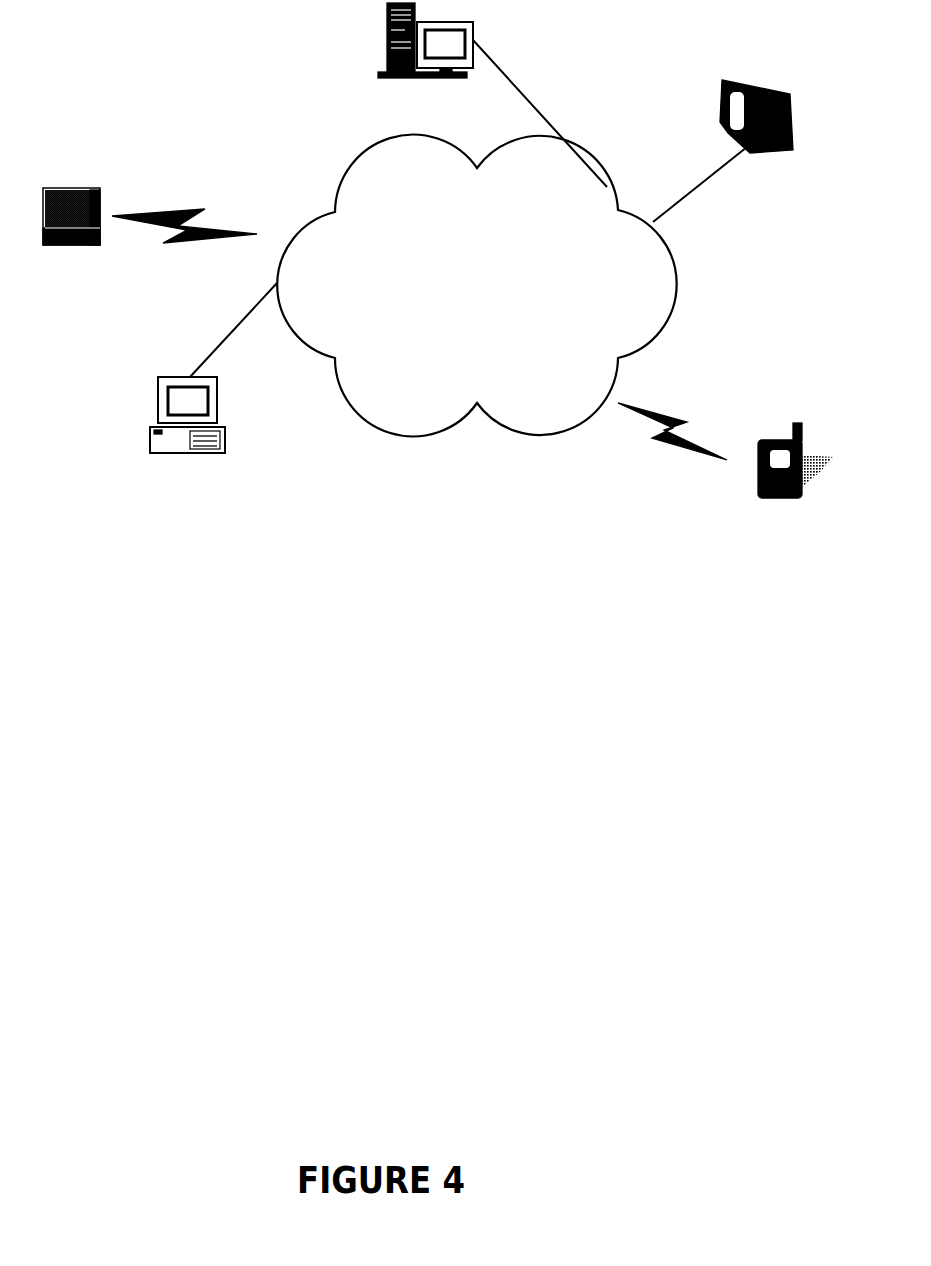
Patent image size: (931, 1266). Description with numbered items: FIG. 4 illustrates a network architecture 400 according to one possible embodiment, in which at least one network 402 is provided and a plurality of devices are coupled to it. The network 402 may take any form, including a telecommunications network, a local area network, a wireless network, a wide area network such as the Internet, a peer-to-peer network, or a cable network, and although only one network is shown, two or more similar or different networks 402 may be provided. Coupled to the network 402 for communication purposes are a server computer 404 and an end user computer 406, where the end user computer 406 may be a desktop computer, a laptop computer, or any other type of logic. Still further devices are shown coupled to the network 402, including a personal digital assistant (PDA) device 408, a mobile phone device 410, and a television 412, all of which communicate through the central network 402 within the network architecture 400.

The network architecture 400 is at (448, 460).
The network 402 is at (535, 435).
The server computer 404 is at (387, 42).
The end user computer 406 is at (150, 432).
The personal digital assistant (PDA) device 408 is at (73, 188).
The mobile phone device 410 is at (758, 442).
The television 412 is at (737, 72).